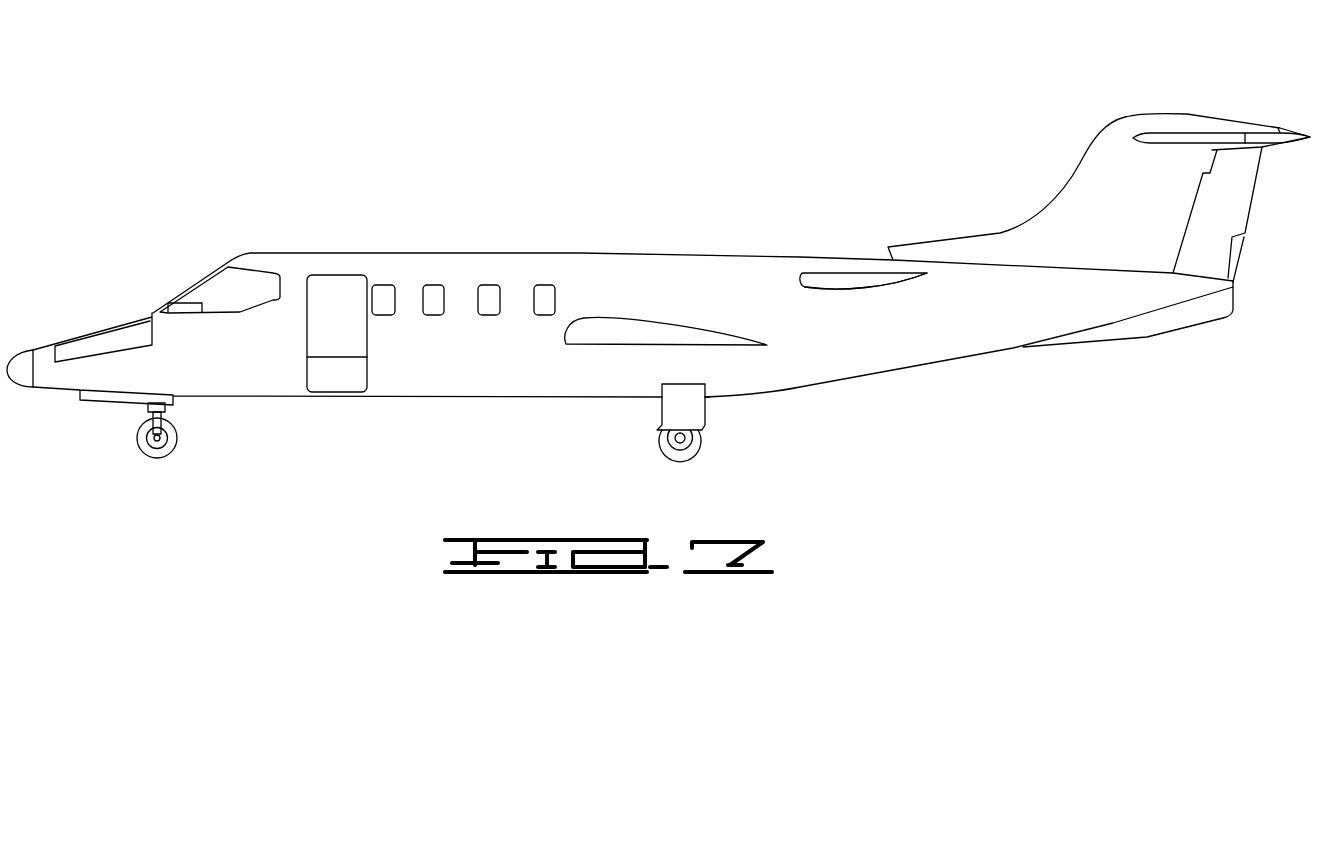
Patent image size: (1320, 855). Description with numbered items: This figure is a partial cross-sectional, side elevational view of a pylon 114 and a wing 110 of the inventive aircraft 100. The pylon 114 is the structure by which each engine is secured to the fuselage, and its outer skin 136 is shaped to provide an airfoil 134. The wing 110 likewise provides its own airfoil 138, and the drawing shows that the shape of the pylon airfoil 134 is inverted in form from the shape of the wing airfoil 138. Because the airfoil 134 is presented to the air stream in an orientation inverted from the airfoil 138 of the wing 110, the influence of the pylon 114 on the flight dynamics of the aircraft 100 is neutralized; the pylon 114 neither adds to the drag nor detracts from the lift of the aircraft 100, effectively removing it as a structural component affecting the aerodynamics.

The aircraft 100 is at (422, 92).
The wing 110 is at (641, 285).
The pylon 114 is at (893, 305).
The airfoil 134 is at (790, 278).
The skin 136 is at (818, 290).
The airfoil 138 is at (553, 338).